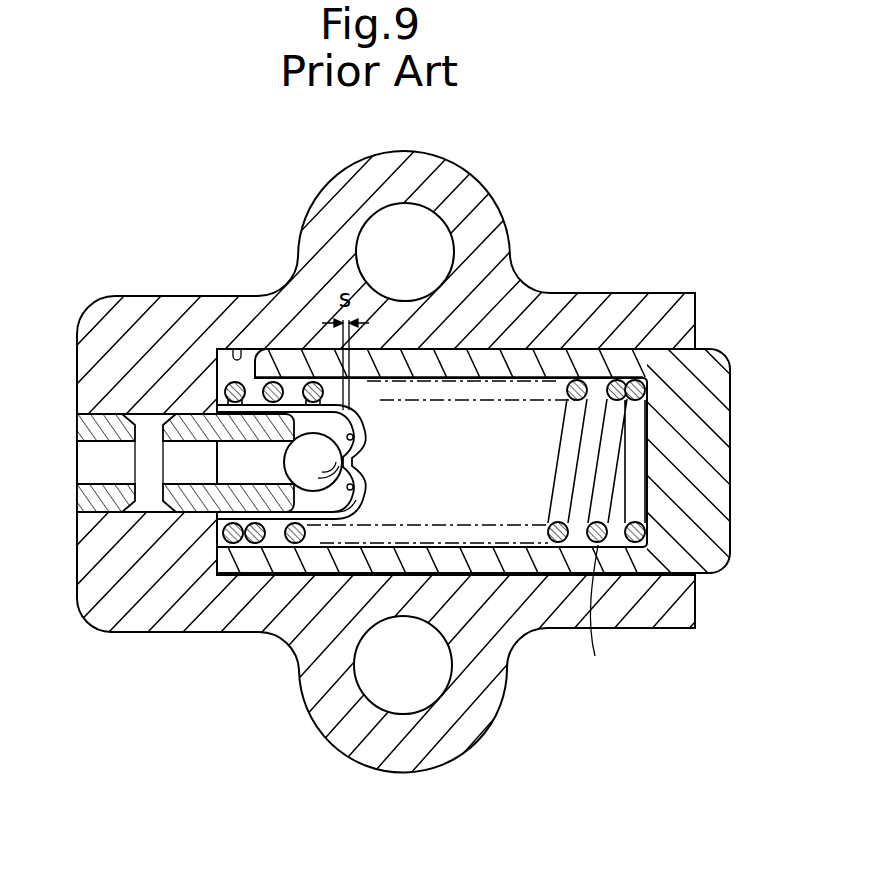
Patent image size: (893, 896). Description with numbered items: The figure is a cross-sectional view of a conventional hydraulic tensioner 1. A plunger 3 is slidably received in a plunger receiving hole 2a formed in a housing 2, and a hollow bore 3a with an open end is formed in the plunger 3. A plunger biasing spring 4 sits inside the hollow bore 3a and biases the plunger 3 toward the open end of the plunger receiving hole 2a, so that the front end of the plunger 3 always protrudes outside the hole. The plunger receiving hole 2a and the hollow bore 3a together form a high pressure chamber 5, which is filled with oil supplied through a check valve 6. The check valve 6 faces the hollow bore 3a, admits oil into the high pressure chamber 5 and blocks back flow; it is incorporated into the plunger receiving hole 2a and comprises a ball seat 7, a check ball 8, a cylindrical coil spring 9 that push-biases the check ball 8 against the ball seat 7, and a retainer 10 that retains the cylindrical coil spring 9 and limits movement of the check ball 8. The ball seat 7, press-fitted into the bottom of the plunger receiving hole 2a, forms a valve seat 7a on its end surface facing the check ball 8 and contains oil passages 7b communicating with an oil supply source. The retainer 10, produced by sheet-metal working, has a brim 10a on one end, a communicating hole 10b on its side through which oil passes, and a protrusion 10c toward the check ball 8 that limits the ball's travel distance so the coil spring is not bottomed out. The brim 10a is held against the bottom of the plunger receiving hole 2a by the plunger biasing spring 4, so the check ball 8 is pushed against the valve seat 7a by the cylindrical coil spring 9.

The hydraulic tensioner 1 is at (446, 460).
The housing 2 is at (641, 293).
The plunger receiving hole 2a is at (237, 352).
The plunger 3 is at (731, 403).
The hollow bore 3a is at (540, 412).
The plunger biasing spring 4 is at (591, 617).
The high pressure chamber 5 is at (515, 448).
The check valve 6 is at (372, 463).
The ball seat 7 is at (100, 429).
The valve seat 7a is at (280, 460).
The oil passages 7b is at (182, 467).
The check ball 8 is at (326, 458).
The cylindrical coil spring 9 is at (364, 499).
The retainer 10 is at (367, 433).
The brim 10a is at (215, 530).
The communicating hole 10b is at (312, 509).
The protrusion 10c is at (367, 458).